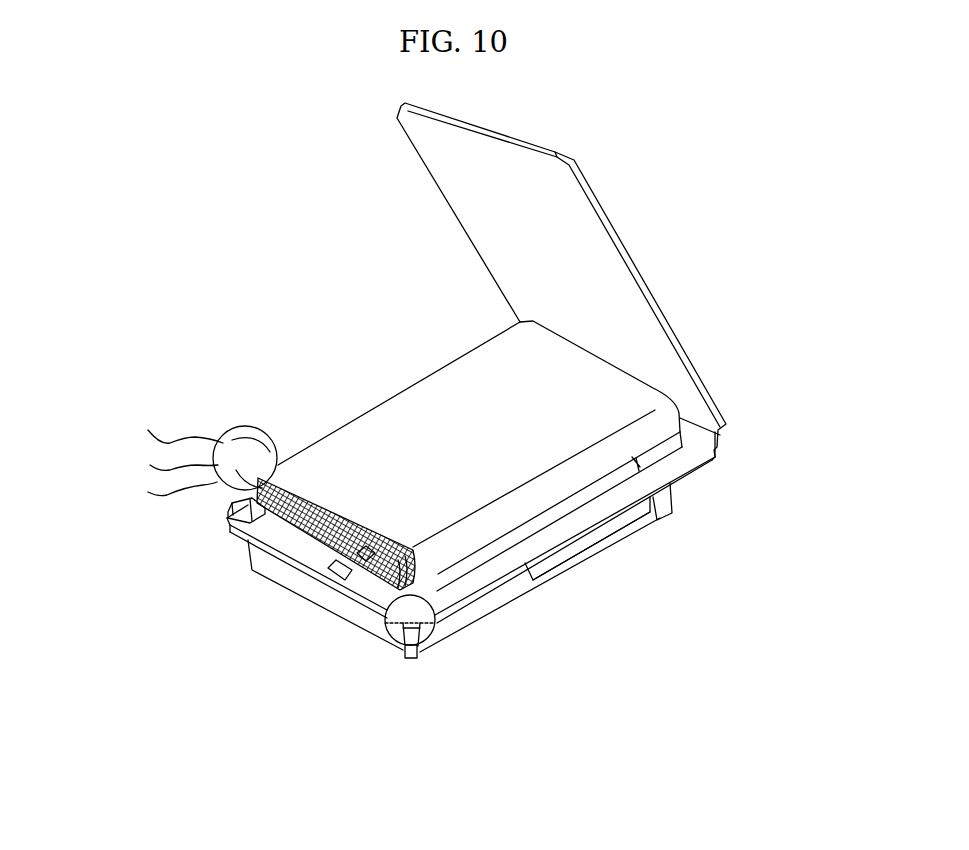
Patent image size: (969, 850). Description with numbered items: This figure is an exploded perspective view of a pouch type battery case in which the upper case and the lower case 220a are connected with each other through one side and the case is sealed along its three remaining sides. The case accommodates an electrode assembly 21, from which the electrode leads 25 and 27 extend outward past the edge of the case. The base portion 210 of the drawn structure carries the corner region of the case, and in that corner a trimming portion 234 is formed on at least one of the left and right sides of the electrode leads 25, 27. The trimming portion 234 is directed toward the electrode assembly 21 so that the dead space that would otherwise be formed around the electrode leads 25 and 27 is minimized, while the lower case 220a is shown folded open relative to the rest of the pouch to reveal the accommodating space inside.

The electrode assembly 21 is at (121, 425).
The electrode lead 25 is at (227, 523).
The electrode lead 27 is at (362, 565).
The base 210 is at (608, 558).
The lower case 220a is at (715, 393).
The trimming portion 234 is at (448, 640).